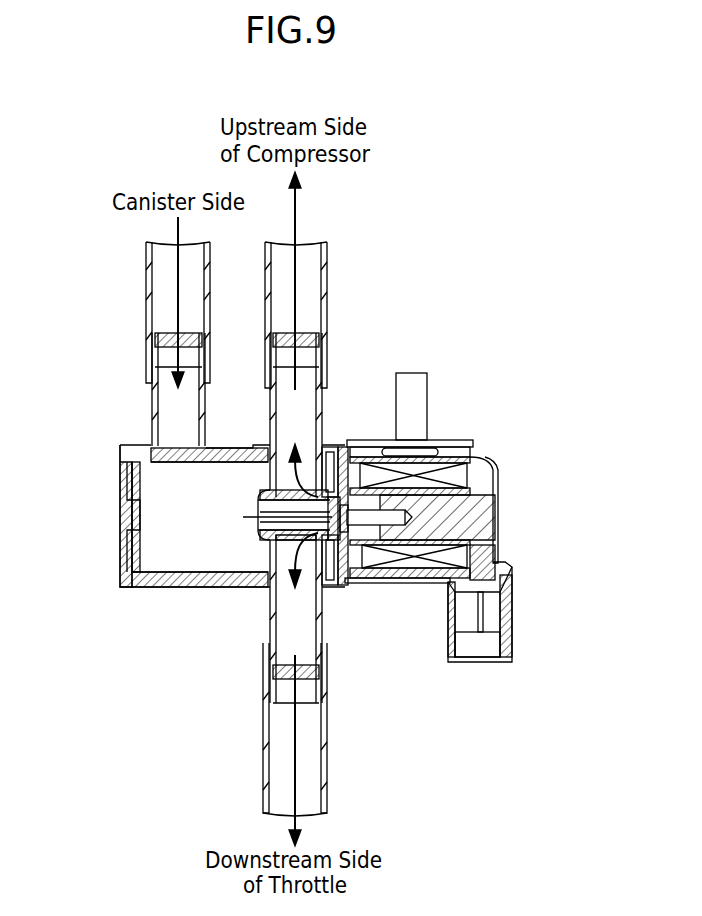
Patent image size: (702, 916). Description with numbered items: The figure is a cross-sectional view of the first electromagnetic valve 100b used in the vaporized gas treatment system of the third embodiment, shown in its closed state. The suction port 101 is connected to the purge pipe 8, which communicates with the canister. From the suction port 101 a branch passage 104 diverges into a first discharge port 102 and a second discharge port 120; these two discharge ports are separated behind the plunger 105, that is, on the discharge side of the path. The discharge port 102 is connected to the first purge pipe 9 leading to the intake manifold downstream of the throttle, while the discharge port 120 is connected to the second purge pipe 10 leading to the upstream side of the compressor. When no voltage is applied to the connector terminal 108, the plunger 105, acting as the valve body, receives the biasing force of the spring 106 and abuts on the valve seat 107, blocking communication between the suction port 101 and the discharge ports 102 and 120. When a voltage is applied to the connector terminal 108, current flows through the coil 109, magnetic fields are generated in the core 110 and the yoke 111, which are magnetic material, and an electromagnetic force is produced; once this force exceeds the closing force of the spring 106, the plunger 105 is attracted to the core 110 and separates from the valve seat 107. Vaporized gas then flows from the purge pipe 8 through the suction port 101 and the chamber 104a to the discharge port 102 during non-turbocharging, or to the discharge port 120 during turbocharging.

The purge pipe 8 is at (147, 283).
The first purge pipe 9 is at (263, 736).
The second purge pipe 10 is at (328, 283).
The first electromagnetic valve 100b is at (547, 300).
The suction port 101 is at (151, 403).
The discharge port 102 is at (269, 622).
The branch passage 104 is at (118, 548).
The chamber 104a is at (147, 481).
The plunger 105 is at (345, 580).
The spring 106 is at (364, 446).
The valve seat 107 is at (318, 596).
The connector terminal 108 is at (505, 605).
The coil 109 is at (478, 558).
The core 110 is at (488, 508).
The yoke 111 is at (474, 447).
The discharge port 120 is at (322, 396).